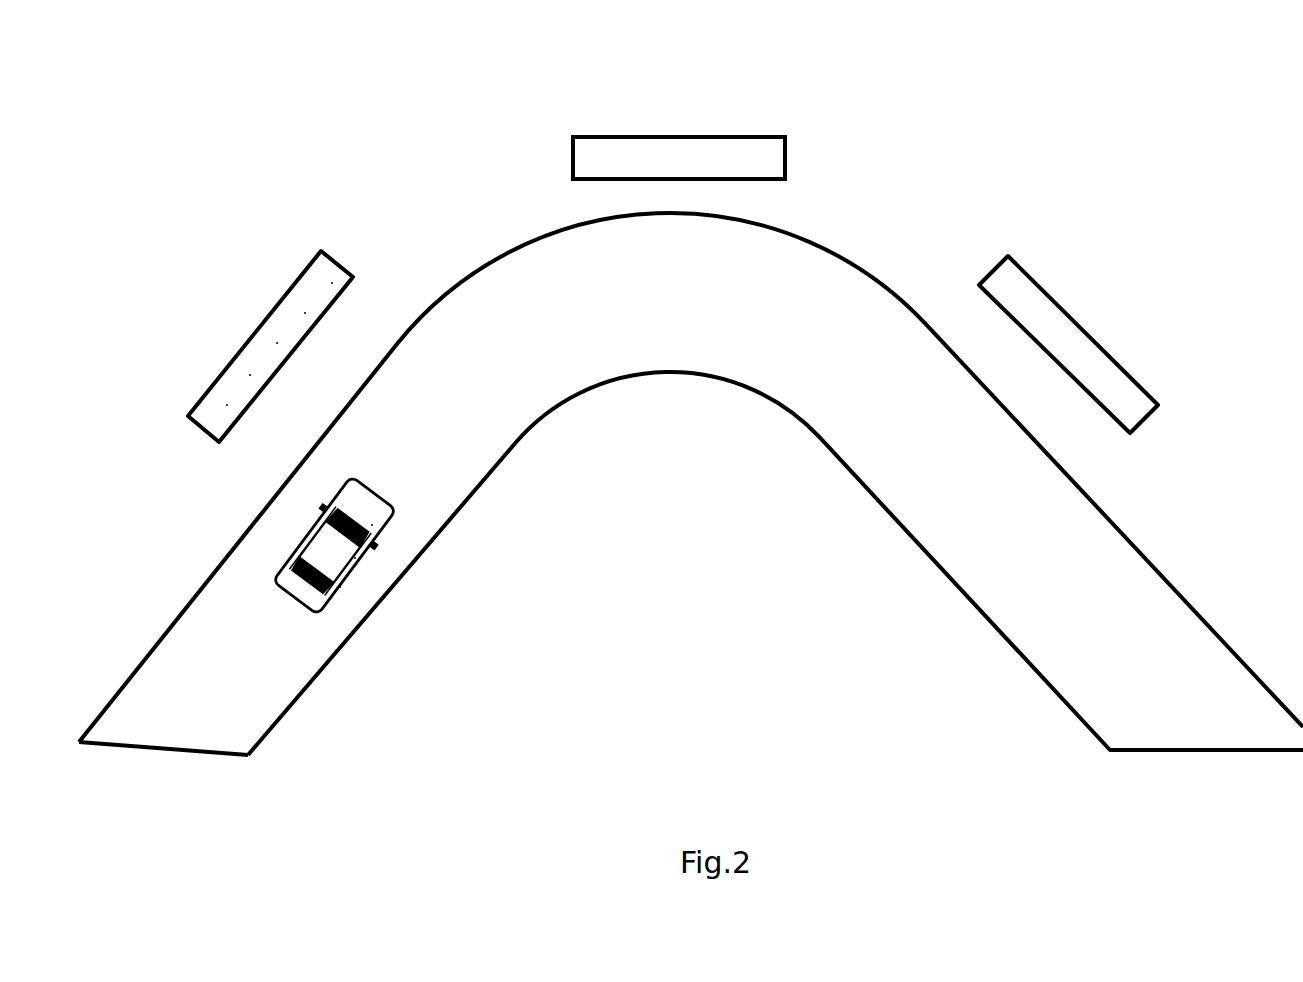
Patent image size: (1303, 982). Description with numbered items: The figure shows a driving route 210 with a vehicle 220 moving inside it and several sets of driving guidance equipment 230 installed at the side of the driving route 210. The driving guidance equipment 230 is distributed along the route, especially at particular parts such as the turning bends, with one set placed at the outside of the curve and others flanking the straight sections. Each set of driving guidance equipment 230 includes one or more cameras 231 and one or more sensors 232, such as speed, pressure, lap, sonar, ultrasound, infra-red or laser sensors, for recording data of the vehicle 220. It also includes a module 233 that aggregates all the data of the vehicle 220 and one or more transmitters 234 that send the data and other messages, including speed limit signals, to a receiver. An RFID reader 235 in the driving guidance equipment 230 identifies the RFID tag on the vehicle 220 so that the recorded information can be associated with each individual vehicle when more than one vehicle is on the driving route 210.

The driving route 210 is at (188, 697).
The vehicle 220 is at (287, 545).
The driving guidance equipment 230 is at (681, 125).
The camera 231 is at (227, 405).
The sensor 232 is at (250, 375).
The module 233 is at (277, 343).
The transmitter 234 is at (305, 313).
The RFID reader 235 is at (332, 283).